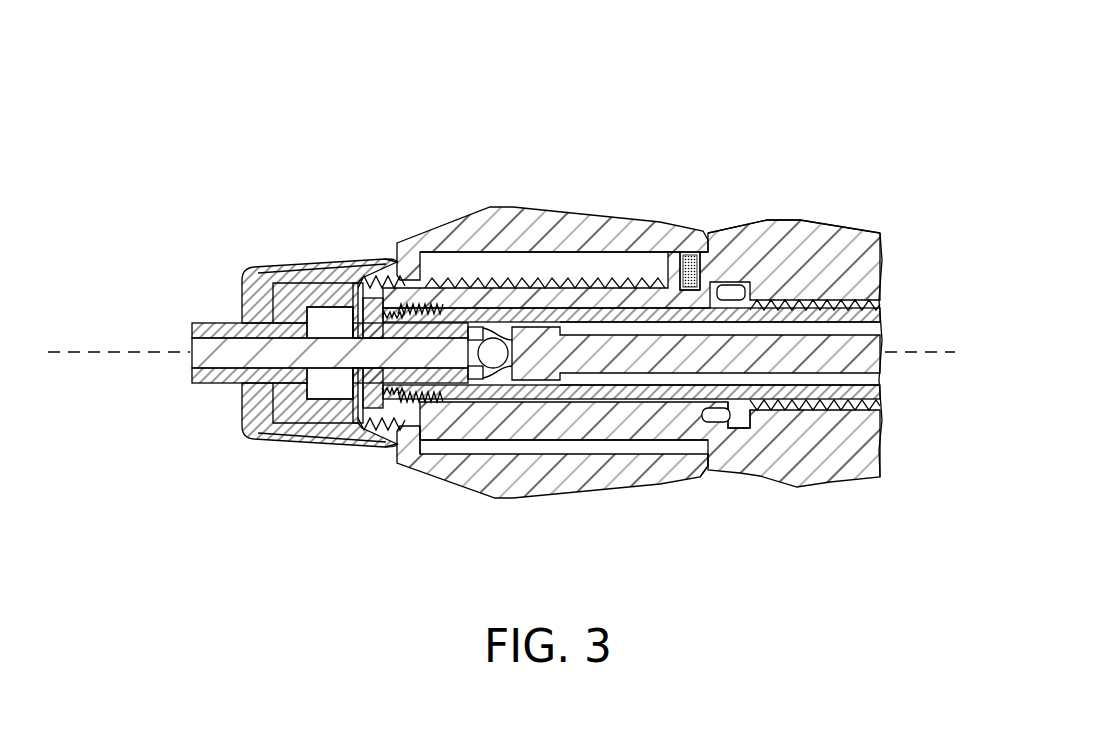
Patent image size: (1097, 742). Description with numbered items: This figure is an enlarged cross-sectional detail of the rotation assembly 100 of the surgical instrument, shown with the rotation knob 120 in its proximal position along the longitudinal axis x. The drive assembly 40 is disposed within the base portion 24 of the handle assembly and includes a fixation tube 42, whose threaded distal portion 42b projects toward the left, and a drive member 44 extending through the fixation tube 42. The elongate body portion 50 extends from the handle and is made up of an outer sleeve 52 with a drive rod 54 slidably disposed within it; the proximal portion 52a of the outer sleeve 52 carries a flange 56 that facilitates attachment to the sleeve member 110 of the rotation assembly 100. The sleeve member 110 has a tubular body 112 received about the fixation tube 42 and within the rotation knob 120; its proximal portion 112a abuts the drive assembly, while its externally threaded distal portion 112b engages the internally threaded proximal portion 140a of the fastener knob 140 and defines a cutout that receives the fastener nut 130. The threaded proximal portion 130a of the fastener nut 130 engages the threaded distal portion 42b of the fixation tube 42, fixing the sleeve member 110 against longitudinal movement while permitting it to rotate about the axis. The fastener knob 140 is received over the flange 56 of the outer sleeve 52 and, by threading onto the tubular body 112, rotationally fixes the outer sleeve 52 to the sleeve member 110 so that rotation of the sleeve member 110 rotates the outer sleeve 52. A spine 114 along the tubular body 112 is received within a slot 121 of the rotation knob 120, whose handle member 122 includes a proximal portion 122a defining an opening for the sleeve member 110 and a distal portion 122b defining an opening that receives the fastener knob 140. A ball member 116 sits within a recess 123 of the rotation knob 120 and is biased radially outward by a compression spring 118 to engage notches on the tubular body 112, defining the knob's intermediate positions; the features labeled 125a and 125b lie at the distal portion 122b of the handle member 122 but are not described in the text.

The rotation assembly 100 is at (690, 110).
The base portion 24 is at (870, 232).
The drive assembly 40 is at (830, 282).
The fixation tube 42 is at (569, 405).
The threaded distal portion of fixation tube 42b is at (445, 295).
The drive member 44 is at (797, 328).
The elongate body portion 50 is at (196, 298).
The outer sleeve 52 is at (227, 319).
The proximal portion of outer tube 52a is at (268, 378).
The drive rod 54 is at (195, 392).
The flange 56 is at (292, 412).
The sleeve member 110 is at (630, 445).
The tubular body 112 is at (597, 240).
The proximal portion of tubular body 112a is at (757, 232).
The externally threaded distal portion of tubular body 112b is at (410, 410).
The spine 114 is at (472, 445).
The ball member 116 is at (695, 264).
The compression spring 118 is at (688, 240).
The rotation knob 120 is at (506, 203).
The slot 121 is at (686, 447).
The handle member 122 is at (553, 236).
The proximal portion of handle member 122a is at (714, 437).
The distal portion of handle member 122b is at (425, 470).
The recess 123 is at (720, 284).
The slot 125a is at (722, 424).
The lower slot 125b is at (492, 450).
The fastener nut 130 is at (378, 285).
The threaded proximal portion of fastener nut 130a is at (422, 300).
The fastener knob 140 is at (300, 266).
The threaded proximal portion of fastener knob 140a is at (351, 261).